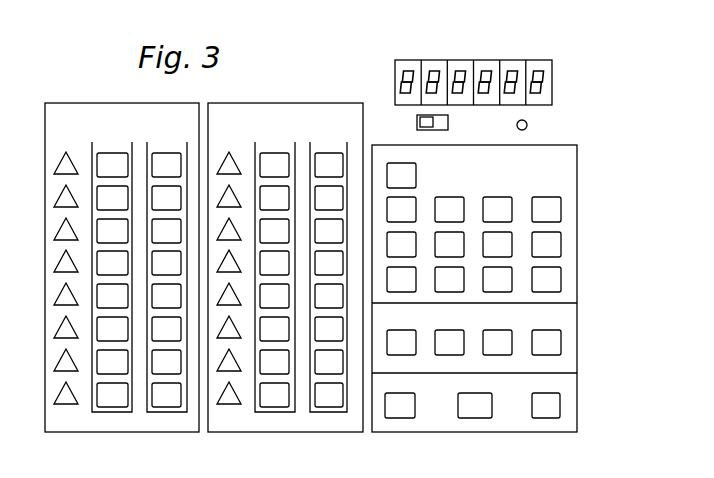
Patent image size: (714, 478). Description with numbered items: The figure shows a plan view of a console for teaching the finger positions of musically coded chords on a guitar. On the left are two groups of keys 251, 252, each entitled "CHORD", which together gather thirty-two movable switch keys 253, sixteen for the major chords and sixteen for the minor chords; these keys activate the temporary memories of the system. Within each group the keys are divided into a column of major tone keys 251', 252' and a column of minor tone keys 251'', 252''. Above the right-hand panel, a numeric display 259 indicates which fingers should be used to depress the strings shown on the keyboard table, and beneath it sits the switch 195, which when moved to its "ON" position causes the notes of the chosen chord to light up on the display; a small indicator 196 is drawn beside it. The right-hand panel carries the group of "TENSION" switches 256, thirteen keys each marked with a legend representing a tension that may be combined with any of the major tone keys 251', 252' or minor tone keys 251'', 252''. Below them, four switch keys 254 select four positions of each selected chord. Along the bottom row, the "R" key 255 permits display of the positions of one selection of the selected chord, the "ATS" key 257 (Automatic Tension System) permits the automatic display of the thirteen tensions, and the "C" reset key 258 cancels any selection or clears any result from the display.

The group of keys 251 is at (113, 243).
The major tone keys 251' is at (48, 278).
The minor tone keys 251'' is at (183, 246).
The group of keys 252 is at (291, 245).
The major tone keys 252' is at (256, 246).
The minor tone keys 252'' is at (342, 246).
The movable switch keys 253 is at (150, 270).
The numeric display 259 is at (537, 62).
The switch 195 is at (446, 129).
The indicator lamp 196 is at (531, 124).
The group of "TENSION" switches 256 is at (560, 169).
The switch keys 254 is at (560, 321).
The "R" key 255 is at (410, 419).
The "ATS" key 257 is at (478, 419).
The "C" reset key 258 is at (547, 419).